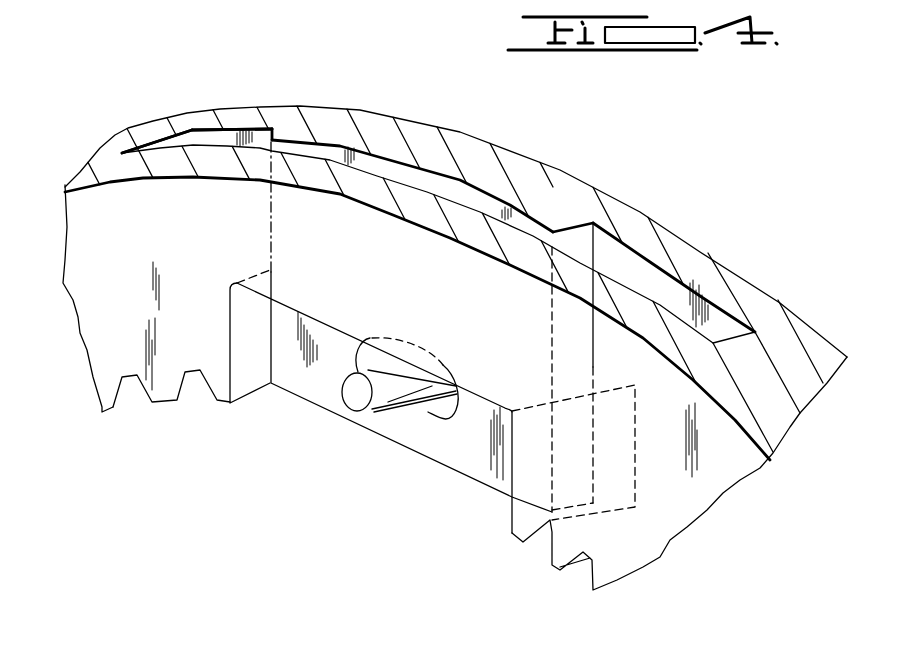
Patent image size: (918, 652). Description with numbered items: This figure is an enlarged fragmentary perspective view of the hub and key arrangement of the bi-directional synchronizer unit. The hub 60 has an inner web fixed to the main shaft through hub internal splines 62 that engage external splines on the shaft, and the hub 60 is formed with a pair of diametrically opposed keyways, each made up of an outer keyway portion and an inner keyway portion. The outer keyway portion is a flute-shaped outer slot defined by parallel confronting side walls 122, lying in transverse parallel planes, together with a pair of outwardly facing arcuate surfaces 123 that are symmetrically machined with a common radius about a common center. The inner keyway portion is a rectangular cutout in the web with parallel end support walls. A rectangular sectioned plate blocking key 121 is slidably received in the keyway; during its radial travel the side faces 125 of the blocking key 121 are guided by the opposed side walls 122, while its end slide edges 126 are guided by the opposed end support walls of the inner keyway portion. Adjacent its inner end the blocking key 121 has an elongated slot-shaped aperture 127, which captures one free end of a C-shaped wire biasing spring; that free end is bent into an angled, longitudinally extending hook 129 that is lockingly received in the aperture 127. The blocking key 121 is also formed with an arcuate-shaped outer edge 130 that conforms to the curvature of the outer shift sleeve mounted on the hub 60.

The hub 60 is at (741, 268).
The hub internal splines 62 is at (168, 393).
The blocking key 121 is at (313, 402).
The side walls 122 is at (236, 137).
The arcuate surfaces 123 is at (183, 140).
The side faces 125 is at (485, 465).
The end slide edges 126 is at (588, 238).
The slot-shaped aperture 127 is at (441, 407).
The hooks 129 is at (388, 402).
The arcuate-shaped outer edge 130 is at (468, 162).